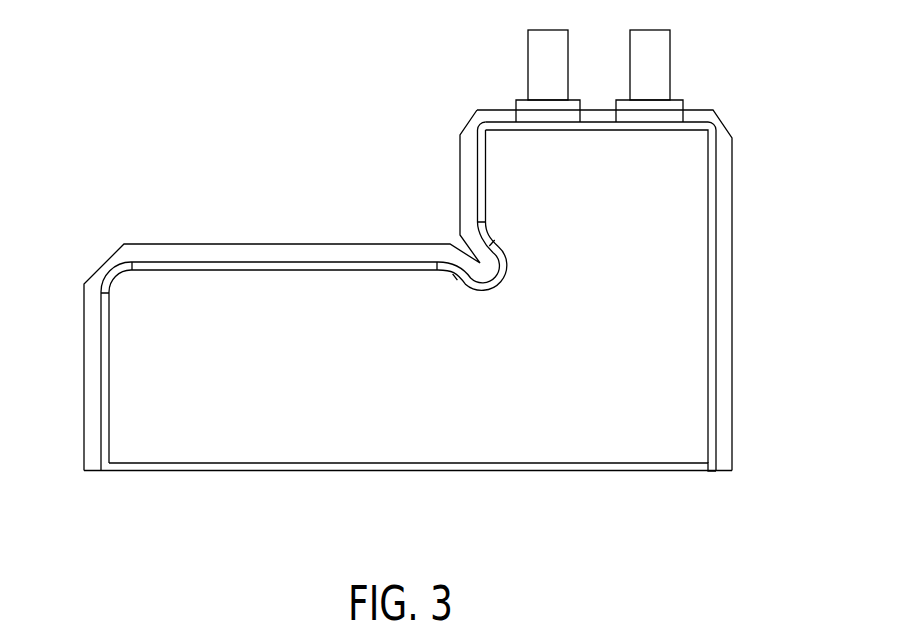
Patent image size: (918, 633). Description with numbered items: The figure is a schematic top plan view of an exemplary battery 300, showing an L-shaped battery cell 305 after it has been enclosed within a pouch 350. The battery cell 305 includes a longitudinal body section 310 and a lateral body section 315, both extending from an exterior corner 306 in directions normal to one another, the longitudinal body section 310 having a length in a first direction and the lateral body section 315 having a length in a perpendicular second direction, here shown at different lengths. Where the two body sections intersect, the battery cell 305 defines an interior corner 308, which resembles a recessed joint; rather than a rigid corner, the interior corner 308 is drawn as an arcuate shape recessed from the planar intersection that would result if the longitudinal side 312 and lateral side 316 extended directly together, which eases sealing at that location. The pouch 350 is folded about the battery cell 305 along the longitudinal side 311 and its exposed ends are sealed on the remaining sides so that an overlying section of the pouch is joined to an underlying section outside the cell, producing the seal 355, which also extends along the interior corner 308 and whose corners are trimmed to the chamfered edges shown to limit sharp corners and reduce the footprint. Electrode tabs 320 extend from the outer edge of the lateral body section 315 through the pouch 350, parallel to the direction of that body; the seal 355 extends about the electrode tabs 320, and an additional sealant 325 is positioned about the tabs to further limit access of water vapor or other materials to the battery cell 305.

The battery 300 is at (441, 278).
The battery cell 305 is at (716, 440).
The exterior corner 306 is at (710, 468).
The interior corner 308 is at (502, 283).
The longitudinal body section 310 is at (223, 471).
The longitudinal side 311 is at (398, 471).
The longitudinal side 312 is at (236, 262).
The lateral body section 315 is at (707, 230).
The lateral side 316 is at (477, 160).
The electrode tabs 320 is at (672, 62).
The sealant 325 is at (516, 101).
The pouch 350 is at (732, 327).
The seal 355 is at (158, 244).